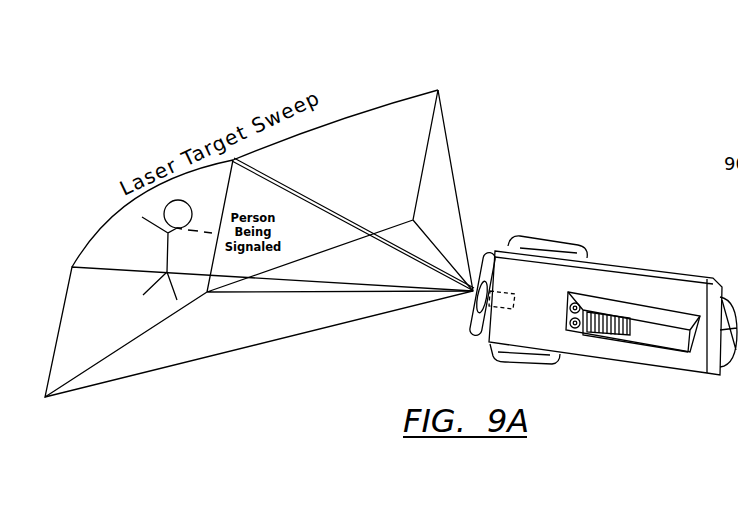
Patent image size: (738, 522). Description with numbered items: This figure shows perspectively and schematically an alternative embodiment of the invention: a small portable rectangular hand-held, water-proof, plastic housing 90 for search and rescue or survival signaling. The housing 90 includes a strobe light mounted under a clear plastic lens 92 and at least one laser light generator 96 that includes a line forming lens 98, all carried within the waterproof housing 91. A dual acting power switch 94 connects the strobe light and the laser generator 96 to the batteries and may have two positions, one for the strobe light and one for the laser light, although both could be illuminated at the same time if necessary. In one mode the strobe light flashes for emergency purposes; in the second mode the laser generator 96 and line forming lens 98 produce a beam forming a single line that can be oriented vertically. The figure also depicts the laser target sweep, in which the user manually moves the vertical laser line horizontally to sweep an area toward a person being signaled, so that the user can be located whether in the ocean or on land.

The housing 90 is at (633, 244).
The waterproof housing 91 is at (615, 353).
The clear plastic lens 92 is at (485, 262).
The dual acting power switch 94 is at (620, 314).
The laser light generator 96 is at (477, 337).
The line forming lens 98 is at (468, 308).